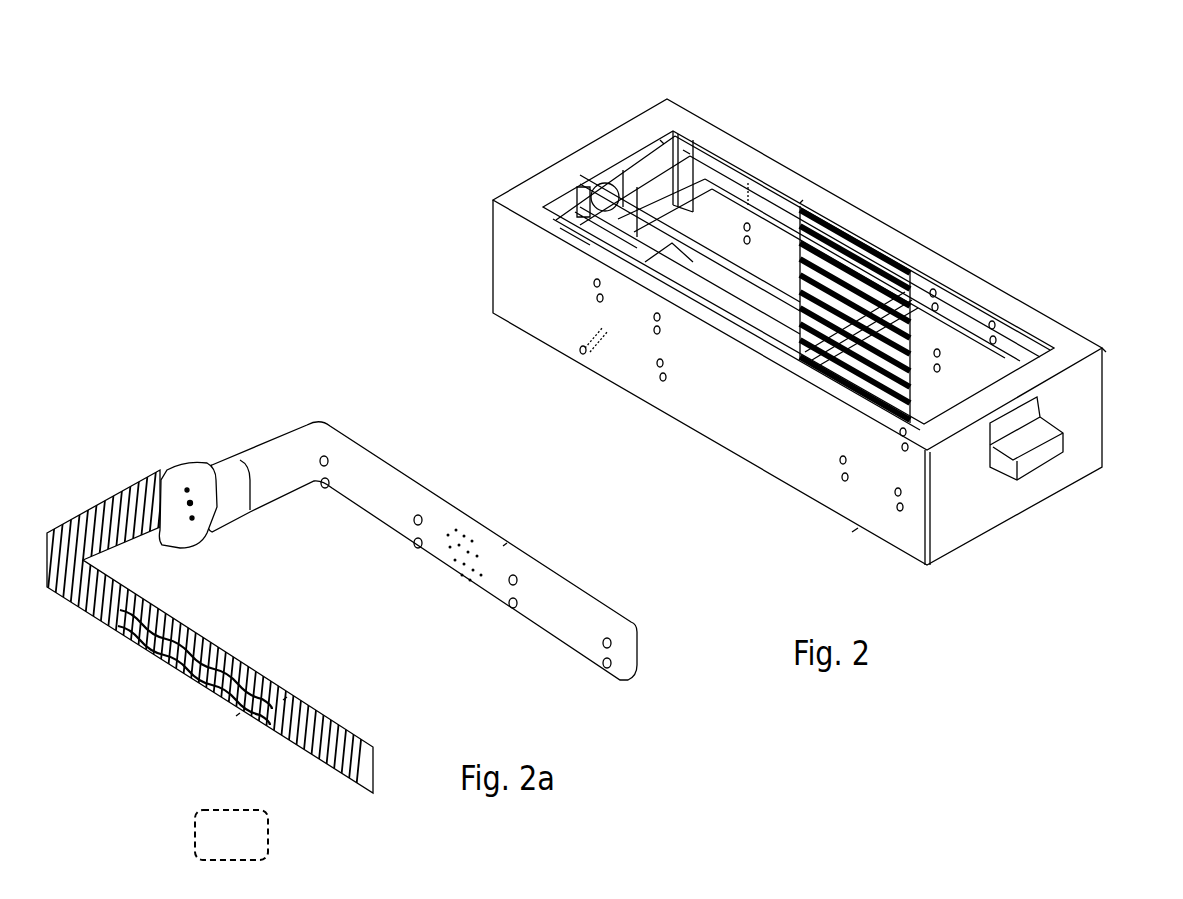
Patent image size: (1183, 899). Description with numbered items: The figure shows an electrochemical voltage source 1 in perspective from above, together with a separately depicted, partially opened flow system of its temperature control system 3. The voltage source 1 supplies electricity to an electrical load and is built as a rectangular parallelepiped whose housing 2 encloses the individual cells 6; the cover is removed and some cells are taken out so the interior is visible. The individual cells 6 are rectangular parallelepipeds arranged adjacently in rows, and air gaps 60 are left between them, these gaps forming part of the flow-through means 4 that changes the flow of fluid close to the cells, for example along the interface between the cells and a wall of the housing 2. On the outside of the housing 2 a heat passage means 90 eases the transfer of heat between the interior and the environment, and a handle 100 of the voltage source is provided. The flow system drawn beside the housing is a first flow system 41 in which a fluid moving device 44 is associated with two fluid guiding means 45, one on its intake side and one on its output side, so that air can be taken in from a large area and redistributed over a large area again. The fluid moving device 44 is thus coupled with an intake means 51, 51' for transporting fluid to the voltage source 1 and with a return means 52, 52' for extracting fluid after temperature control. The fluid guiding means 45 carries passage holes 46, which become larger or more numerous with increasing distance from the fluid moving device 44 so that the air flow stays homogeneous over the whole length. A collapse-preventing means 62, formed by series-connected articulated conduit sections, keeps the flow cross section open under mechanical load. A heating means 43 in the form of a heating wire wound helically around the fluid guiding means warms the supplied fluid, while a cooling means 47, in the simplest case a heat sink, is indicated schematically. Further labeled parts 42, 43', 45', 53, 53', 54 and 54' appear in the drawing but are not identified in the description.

In FIG. 2, the electrochemical voltage source 1 is at (858, 528).
In FIG. 2, the housing 2 is at (975, 540).
In FIG. 2A, the temperature control system 3 is at (93, 507).
In FIG. 2, the flow-through means 4 is at (803, 200).
In FIG. 2A, the flow-through means 4 is at (440, 423).
In FIG. 2A, the first flow system 41 is at (284, 483).
In FIG. 2A, the carrier plate portion 42 is at (418, 531).
In FIG. 2A, the heating means 43 is at (480, 528).
In FIG. 2A, the fastening region 43' is at (317, 675).
In FIG. 2, the fluid moving device 44 is at (669, 257).
In FIG. 2A, the fluid moving device 44 is at (183, 463).
In FIG. 2A, the fluid guiding means 45 is at (535, 519).
In FIG. 2A, the mounting portion 45' is at (201, 730).
In FIG. 2, the passage holes 46 is at (748, 222).
In FIG. 2A, the passage holes 46 is at (513, 583).
In FIG. 2A, the cooling means 47 is at (323, 753).
In FIG. 2, the intake means 51 is at (690, 254).
In FIG. 2, the intake means 51' is at (587, 175).
In FIG. 2, the return means 52 is at (774, 153).
In FIG. 2, the return means 52' is at (555, 364).
In FIG. 2, the screws 53 is at (647, 415).
In FIG. 2, the screws 53' is at (727, 283).
In FIG. 2, the fastening element 54 is at (872, 196).
In FIG. 2, the fastening element 54' is at (829, 362).
In FIG. 2, the individual cell 6 is at (833, 233).
In FIG. 2, the air gaps 60 is at (912, 265).
In FIG. 2A, the collapse-preventing means 62 is at (183, 677).
In FIG. 2, the heat passage means 90 is at (1155, 360).
In FIG. 2, the handle of voltage source 100 is at (1035, 462).